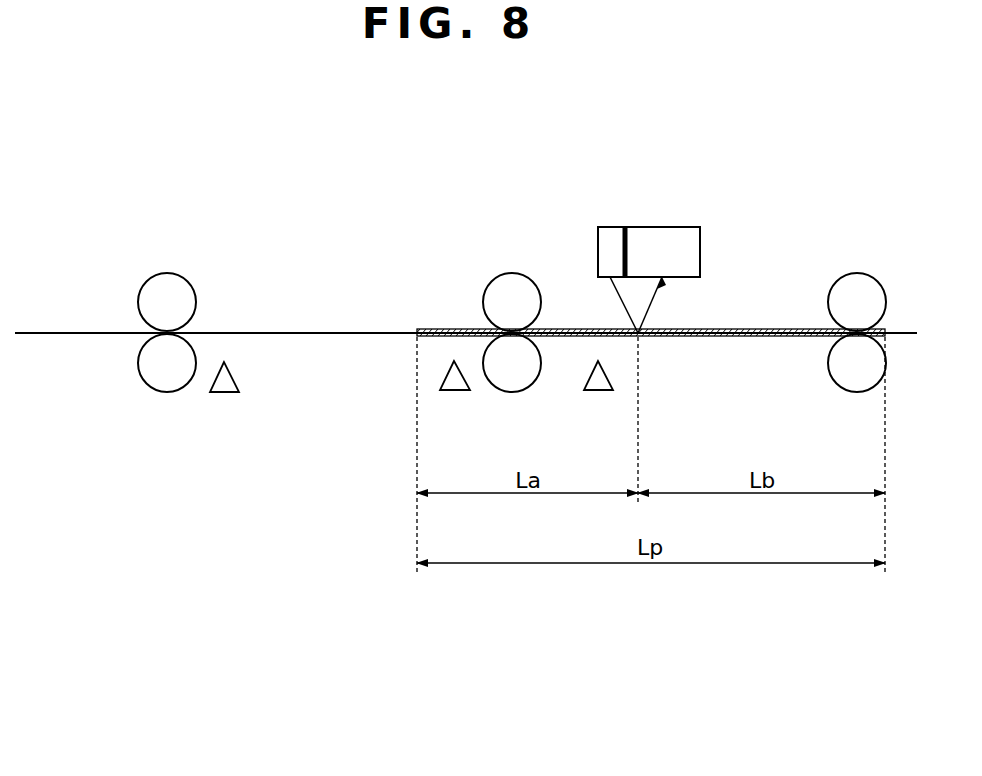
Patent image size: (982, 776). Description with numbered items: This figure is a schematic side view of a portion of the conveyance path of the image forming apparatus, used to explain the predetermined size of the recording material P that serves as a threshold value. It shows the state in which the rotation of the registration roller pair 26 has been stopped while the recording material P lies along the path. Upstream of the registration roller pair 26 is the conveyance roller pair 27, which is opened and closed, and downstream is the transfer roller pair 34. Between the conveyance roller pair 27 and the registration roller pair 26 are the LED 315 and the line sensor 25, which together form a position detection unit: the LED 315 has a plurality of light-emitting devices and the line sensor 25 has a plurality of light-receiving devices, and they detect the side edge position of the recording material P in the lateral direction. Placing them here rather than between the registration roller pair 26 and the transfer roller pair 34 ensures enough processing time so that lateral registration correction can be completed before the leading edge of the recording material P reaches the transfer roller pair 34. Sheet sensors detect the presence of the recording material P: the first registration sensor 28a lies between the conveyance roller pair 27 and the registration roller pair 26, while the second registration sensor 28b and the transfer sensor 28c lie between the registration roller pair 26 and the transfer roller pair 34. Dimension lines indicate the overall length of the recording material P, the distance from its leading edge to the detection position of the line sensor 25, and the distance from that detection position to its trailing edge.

The transfer roller pair 34 is at (168, 273).
The registration roller pair 26 is at (512, 273).
The conveyance roller pair 27 is at (857, 273).
The line sensor 25 is at (681, 227).
The LED 315 is at (613, 227).
The recording material P is at (757, 328).
The first registration sensor 28a is at (598, 392).
The second registration sensor 28b is at (454, 392).
The transfer sensor 28c is at (224, 394).